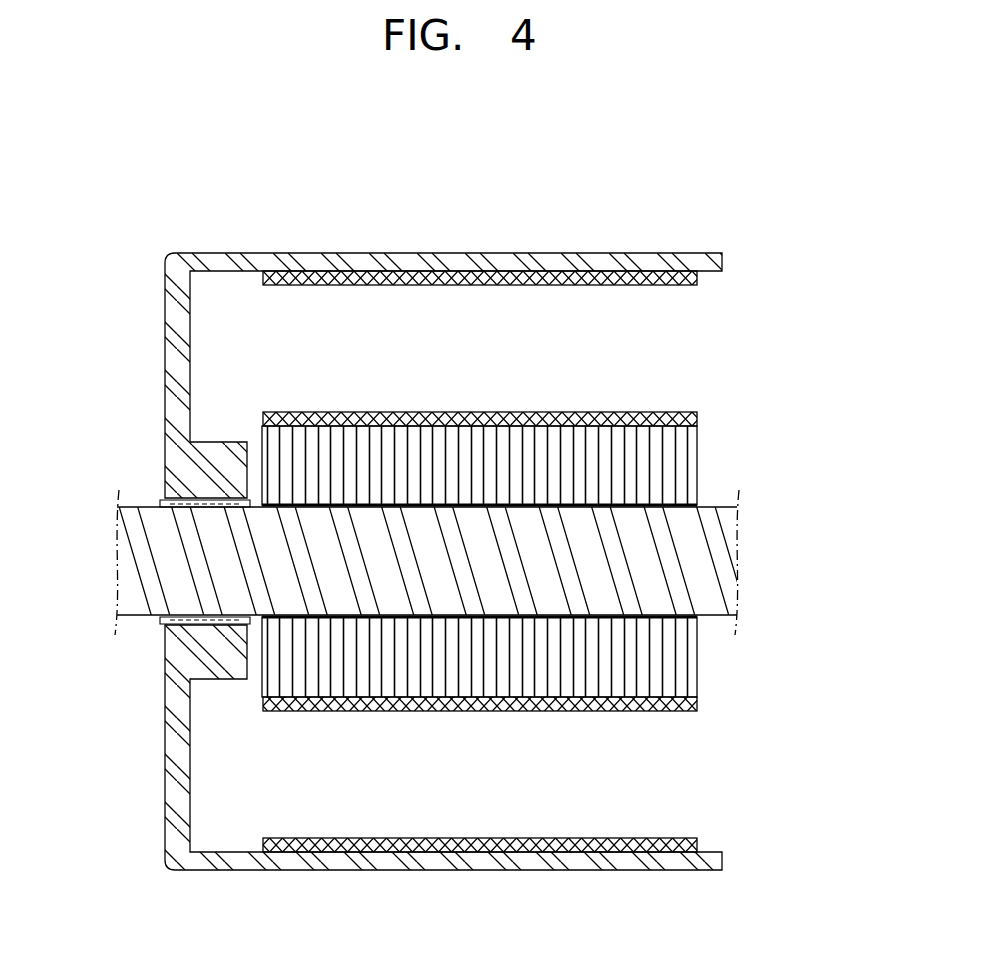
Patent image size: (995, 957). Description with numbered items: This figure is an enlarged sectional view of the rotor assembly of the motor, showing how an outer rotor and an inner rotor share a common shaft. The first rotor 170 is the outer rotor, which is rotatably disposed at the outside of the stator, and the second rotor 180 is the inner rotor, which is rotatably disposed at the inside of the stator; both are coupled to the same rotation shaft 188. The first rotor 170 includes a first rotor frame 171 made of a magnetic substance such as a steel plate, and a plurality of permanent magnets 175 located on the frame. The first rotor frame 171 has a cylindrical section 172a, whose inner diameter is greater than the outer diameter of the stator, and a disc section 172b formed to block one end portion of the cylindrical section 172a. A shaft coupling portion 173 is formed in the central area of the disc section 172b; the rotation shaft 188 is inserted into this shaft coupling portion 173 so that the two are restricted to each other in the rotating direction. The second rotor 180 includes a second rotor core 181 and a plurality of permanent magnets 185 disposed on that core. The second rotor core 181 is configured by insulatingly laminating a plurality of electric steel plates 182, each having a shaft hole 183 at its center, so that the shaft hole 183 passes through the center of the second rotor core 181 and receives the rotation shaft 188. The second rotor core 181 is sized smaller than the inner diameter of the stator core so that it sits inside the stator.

The first rotor 170 is at (432, 538).
The first rotor frame 171 is at (408, 538).
The cylindrical section 172a is at (248, 253).
The disc section 172b is at (167, 293).
The shaft coupling portion 173 is at (223, 448).
The permanent magnets 175 is at (643, 275).
The second rotor 180 is at (470, 534).
The second rotor core 181 is at (546, 553).
The electric steel plates 182 is at (655, 456).
The shaft hole 183 is at (667, 610).
The permanent magnets 185 is at (633, 420).
The rotation shaft 188 is at (138, 564).